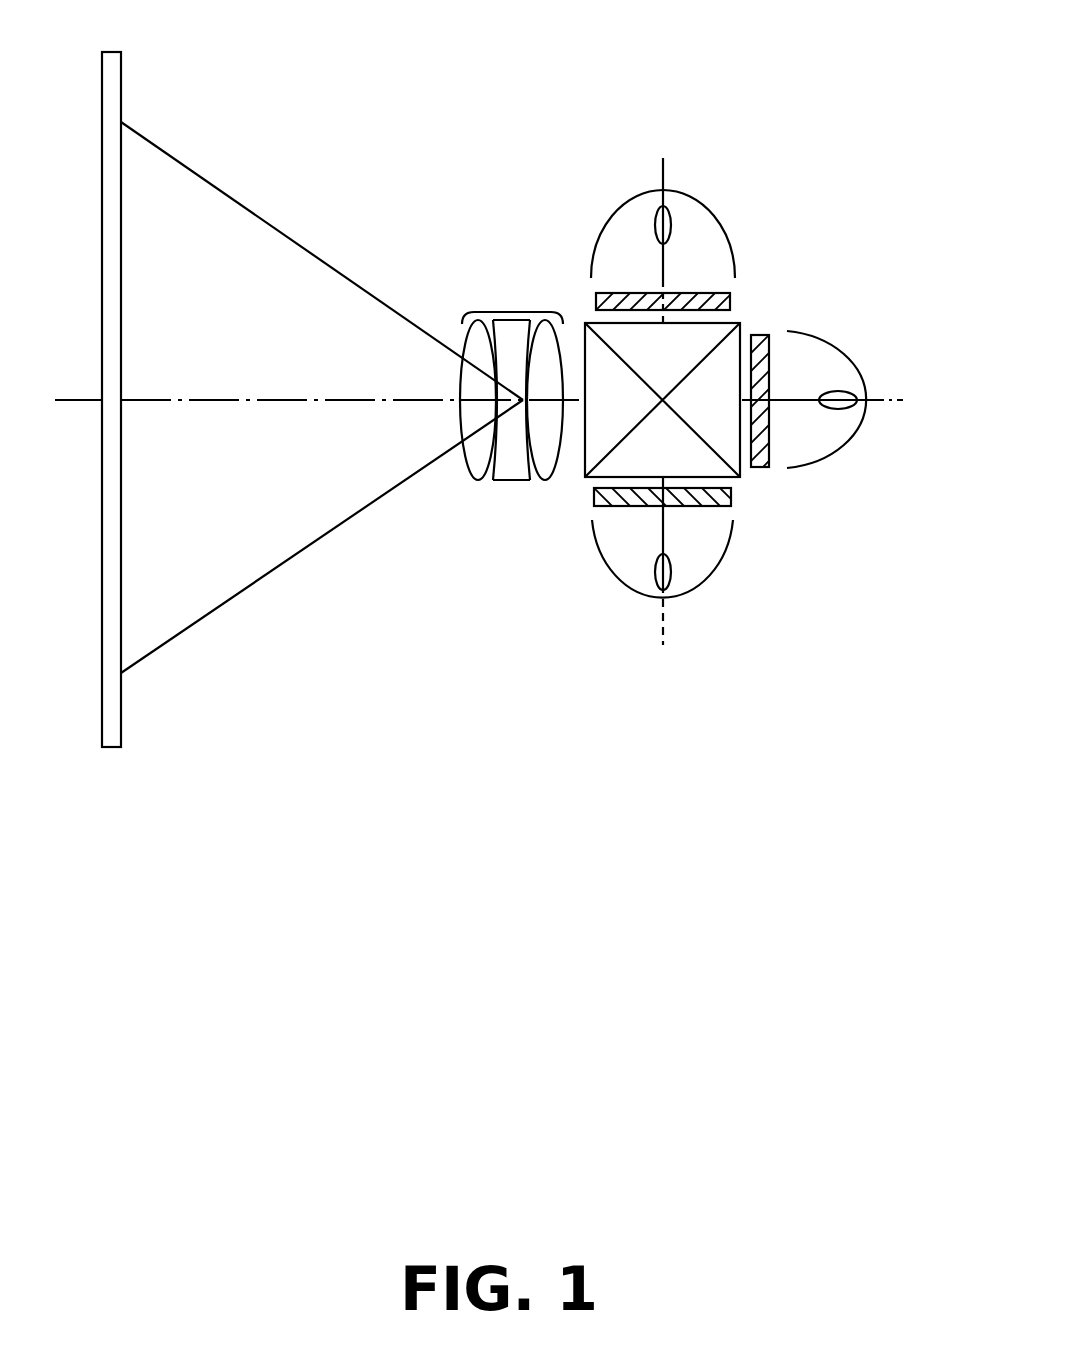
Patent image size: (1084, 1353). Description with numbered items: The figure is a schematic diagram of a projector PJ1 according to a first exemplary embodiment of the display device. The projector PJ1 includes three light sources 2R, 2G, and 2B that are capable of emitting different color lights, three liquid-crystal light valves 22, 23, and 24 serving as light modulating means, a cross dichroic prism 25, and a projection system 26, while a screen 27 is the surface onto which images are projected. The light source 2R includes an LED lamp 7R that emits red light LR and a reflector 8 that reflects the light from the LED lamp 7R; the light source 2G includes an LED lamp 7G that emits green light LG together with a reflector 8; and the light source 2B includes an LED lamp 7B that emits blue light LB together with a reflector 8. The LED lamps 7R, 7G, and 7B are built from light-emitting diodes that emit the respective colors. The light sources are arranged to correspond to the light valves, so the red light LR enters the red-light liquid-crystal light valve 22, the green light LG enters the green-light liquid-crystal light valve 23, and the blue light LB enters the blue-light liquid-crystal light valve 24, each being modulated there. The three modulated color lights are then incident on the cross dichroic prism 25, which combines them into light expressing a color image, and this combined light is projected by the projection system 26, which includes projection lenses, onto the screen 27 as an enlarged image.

The projector PJ1 is at (428, 112).
The light source 2R is at (653, 195).
The light source 2G is at (845, 398).
The light source 2B is at (654, 600).
The LED lamp 7R is at (669, 212).
The LED lamp 7G is at (850, 392).
The LED lamp 7B is at (673, 578).
The reflector 8 is at (722, 228).
The red light LR is at (665, 268).
The green light LG is at (845, 408).
The blue light LB is at (665, 540).
The liquid-crystal light valve 22 is at (595, 298).
The liquid-crystal light valve 23 is at (760, 333).
The liquid-crystal light valve 24 is at (595, 500).
The cross dichroic prism 25 is at (575, 478).
The projection system 26 is at (492, 312).
The screen 27 is at (121, 703).